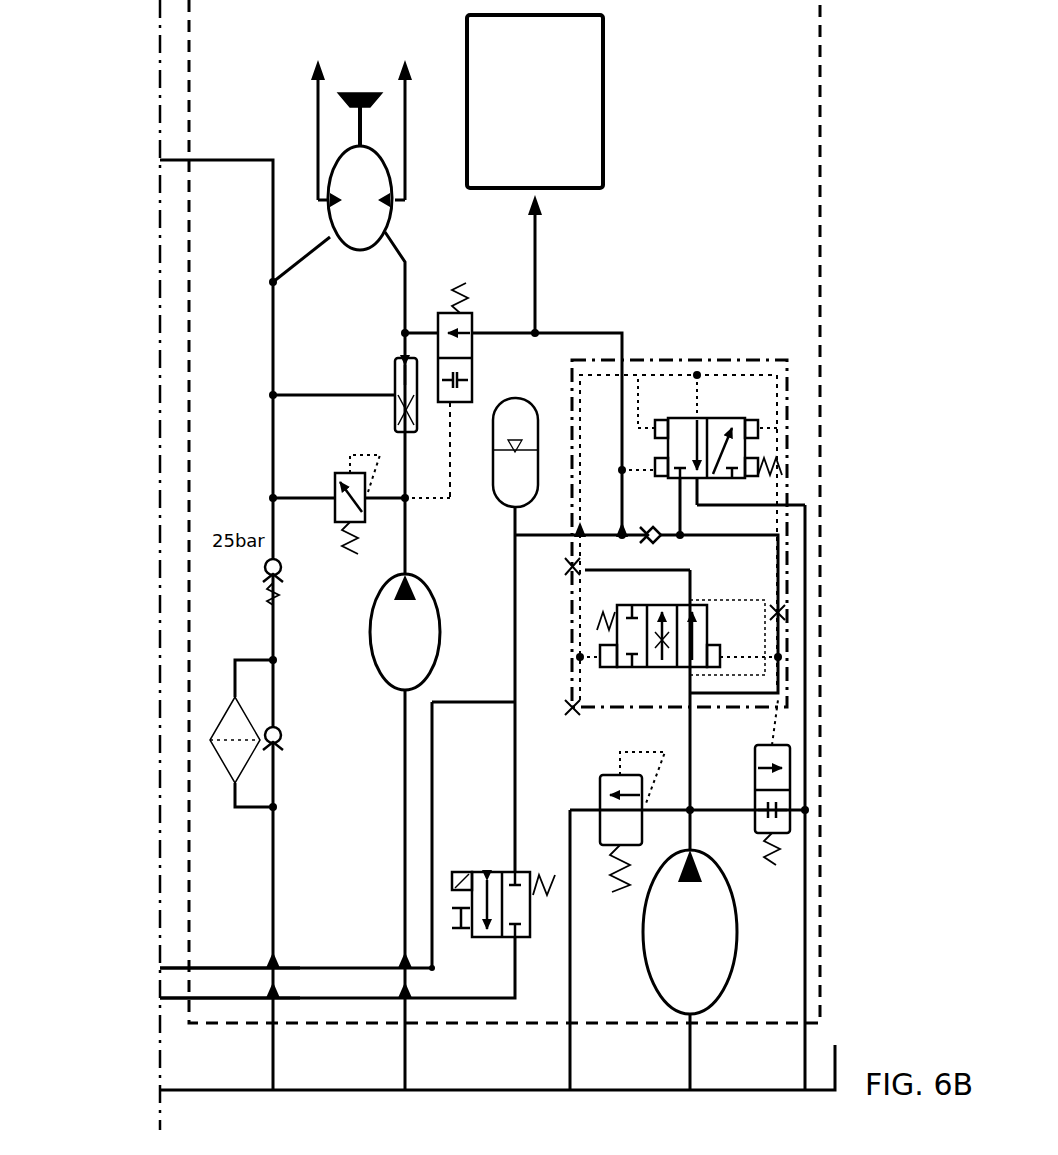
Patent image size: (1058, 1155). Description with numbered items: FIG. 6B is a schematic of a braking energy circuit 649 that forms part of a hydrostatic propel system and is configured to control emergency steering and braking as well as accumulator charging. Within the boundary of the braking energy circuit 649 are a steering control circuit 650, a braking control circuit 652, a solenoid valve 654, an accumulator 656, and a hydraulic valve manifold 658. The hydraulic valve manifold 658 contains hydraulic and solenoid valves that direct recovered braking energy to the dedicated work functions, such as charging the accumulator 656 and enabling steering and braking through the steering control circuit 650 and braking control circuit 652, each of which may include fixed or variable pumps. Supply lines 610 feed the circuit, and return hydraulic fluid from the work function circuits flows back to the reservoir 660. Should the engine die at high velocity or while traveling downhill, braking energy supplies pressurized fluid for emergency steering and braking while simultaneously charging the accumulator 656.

The supply lines 610 is at (180, 966).
The braking energy circuit 649 is at (826, 90).
The steering control circuit 650 is at (316, 136).
The braking control circuit 652 is at (606, 110).
The solenoid valve 654 is at (478, 866).
The accumulator 656 is at (491, 480).
The hydraulic valve manifold 658 is at (790, 432).
The reservoir 660 is at (190, 1088).